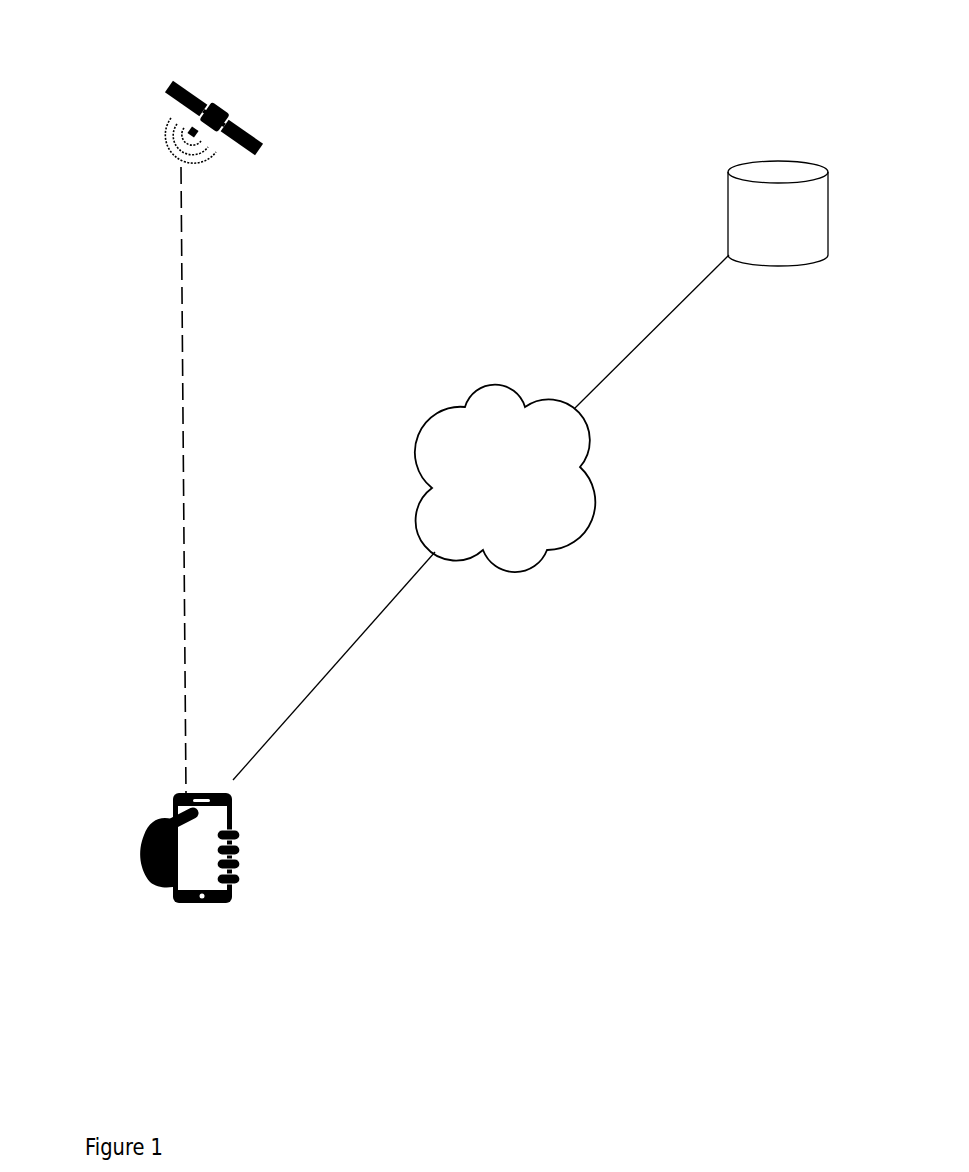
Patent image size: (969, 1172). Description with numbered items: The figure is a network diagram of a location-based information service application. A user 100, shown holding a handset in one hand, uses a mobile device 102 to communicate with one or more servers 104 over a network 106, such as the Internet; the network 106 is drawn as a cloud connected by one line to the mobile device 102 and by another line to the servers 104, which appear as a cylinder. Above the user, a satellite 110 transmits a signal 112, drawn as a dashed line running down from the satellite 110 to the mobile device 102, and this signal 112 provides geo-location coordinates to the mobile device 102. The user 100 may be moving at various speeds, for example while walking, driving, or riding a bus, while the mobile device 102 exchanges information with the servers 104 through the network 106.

The user 100 is at (132, 862).
The mobile device 102 is at (253, 830).
The server 104 is at (828, 220).
The network 106 is at (537, 397).
The satellite 110 is at (250, 115).
The signal 112 is at (183, 482).